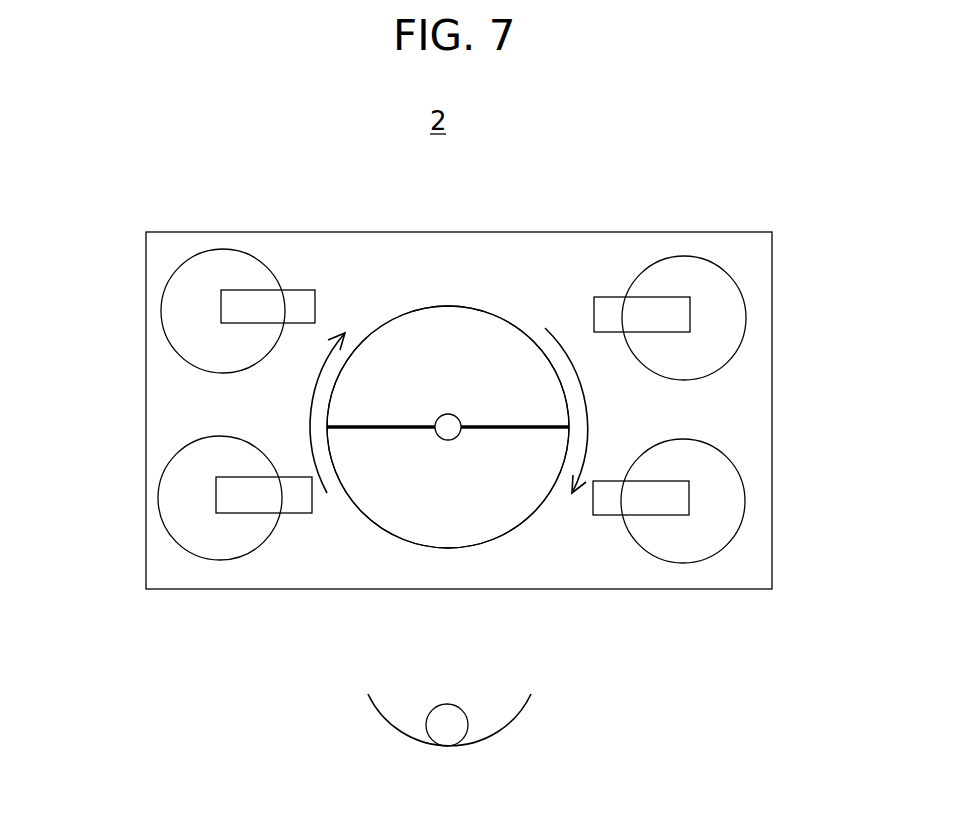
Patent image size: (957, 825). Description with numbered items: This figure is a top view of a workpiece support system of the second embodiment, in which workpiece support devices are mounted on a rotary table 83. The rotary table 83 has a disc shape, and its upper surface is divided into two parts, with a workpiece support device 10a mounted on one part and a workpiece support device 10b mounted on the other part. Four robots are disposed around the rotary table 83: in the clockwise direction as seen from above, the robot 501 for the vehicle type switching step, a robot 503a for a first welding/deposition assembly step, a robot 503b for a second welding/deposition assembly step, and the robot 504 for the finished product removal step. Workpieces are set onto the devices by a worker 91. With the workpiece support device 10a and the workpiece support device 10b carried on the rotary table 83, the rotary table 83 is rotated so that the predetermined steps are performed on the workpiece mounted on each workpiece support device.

The workpiece support device 10a is at (383, 498).
The workpiece support device 10b is at (478, 332).
The rotary table 83 is at (517, 528).
The worker 91 is at (503, 735).
The robot 501 is at (737, 310).
The robot 503a is at (735, 498).
The robot 503b is at (168, 493).
The robot 504 is at (168, 307).